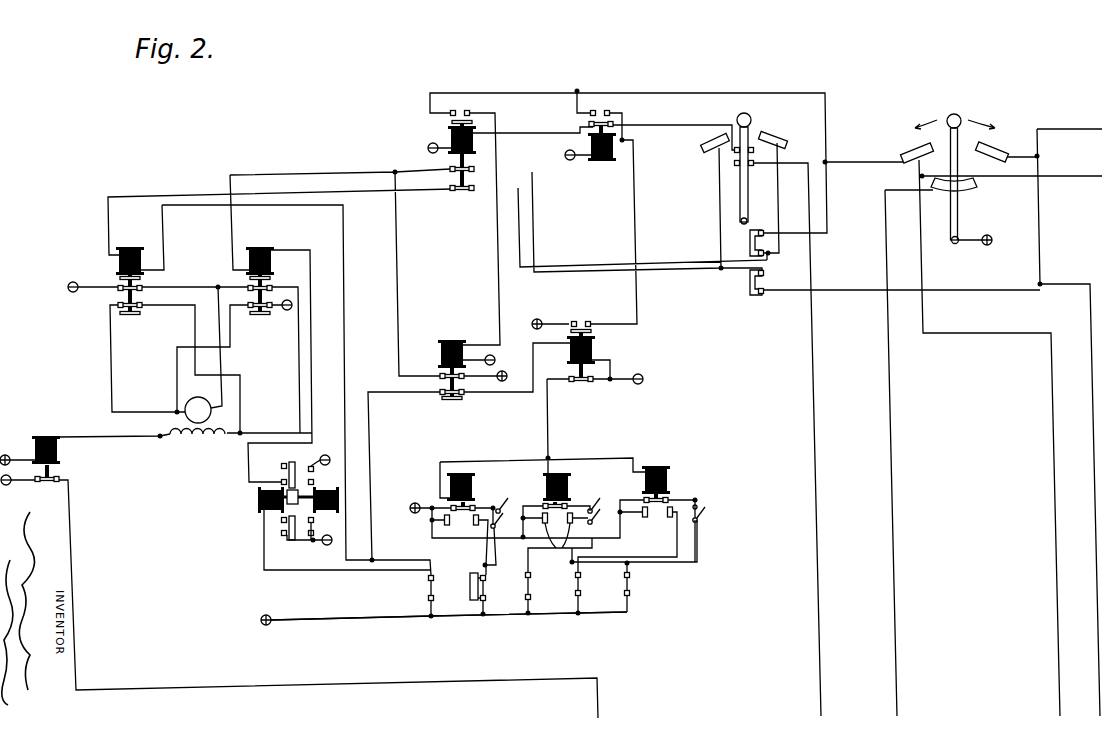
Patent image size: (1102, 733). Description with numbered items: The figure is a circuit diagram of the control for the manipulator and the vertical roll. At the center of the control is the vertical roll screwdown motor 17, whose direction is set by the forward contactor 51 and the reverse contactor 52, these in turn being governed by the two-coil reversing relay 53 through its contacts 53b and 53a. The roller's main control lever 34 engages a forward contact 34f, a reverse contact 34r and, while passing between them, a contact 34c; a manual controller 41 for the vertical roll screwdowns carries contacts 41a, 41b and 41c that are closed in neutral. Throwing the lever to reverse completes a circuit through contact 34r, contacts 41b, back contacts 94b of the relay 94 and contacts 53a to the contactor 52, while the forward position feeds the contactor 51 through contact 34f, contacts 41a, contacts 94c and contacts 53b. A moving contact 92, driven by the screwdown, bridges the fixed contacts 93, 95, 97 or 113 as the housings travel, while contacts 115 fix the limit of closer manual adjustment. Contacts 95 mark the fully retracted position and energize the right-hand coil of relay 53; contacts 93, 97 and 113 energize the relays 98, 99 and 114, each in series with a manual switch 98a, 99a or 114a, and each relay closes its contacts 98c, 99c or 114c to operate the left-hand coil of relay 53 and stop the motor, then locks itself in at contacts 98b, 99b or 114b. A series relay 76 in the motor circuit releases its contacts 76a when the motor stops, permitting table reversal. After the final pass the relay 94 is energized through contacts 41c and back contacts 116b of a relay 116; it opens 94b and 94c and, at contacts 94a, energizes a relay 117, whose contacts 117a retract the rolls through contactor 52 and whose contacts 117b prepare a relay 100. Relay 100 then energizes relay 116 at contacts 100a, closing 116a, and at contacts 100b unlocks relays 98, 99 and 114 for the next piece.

The relay 94 is at (451, 137).
The contacts of relay 94 94a is at (466, 110).
The back contacts of relay 94 94b is at (474, 172).
The contacts of relay 94 94c is at (457, 192).
The relay 116 is at (606, 161).
The contacts of relay 116 116a is at (607, 110).
The back contacts of relay 116 116b is at (613, 124).
The manual controller for the vertical roll screwdowns 41 is at (692, 212).
The contacts of controller 41 41a is at (763, 242).
The contacts of controller 41 41b is at (763, 282).
The contacts of controller 41 41c is at (734, 165).
The main control lever 34 is at (974, 219).
The forward contact 34f is at (905, 156).
The reverse contact 34r is at (992, 151).
The contact 34c is at (978, 186).
The forward contactor 51 is at (119, 268).
The reverse contactor 52 is at (271, 264).
The vertical roll screwdown motor 17 is at (198, 440).
The relay 117 is at (441, 354).
The contacts of relay 117 117a is at (463, 392).
The contacts of relay 117 117b is at (442, 396).
The relay 100 is at (593, 349).
The contacts of relay 100 100a is at (589, 322).
The contacts of relay 100 100b is at (589, 384).
The series relay 76 is at (60, 455).
The contacts of relay 76 76a is at (53, 483).
The reversing relay 53 is at (262, 515).
The contacts of relay 53 53a is at (284, 470).
The contacts of relay 53 53b is at (322, 465).
The relay 98 is at (474, 491).
The manual switch 98a is at (500, 508).
The contacts of relay 98 98b is at (452, 505).
The contacts of relay 98 98c is at (474, 526).
The relay 99 is at (568, 490).
The manual switch 99a is at (598, 509).
The contacts of relay 99 99b is at (547, 503).
The contacts of relay 99 99c is at (552, 540).
The relay 114 is at (668, 482).
The manual switch 114a is at (703, 518).
The contacts of relay 114 114b is at (666, 498).
The contacts of relay 114 114c is at (646, 526).
The moving contact 92 is at (475, 604).
The fixed contacts 93 is at (486, 597).
The contacts 95 is at (435, 598).
The contacts 97 is at (531, 578).
The contacts 113 is at (581, 578).
The contacts 115 is at (630, 578).